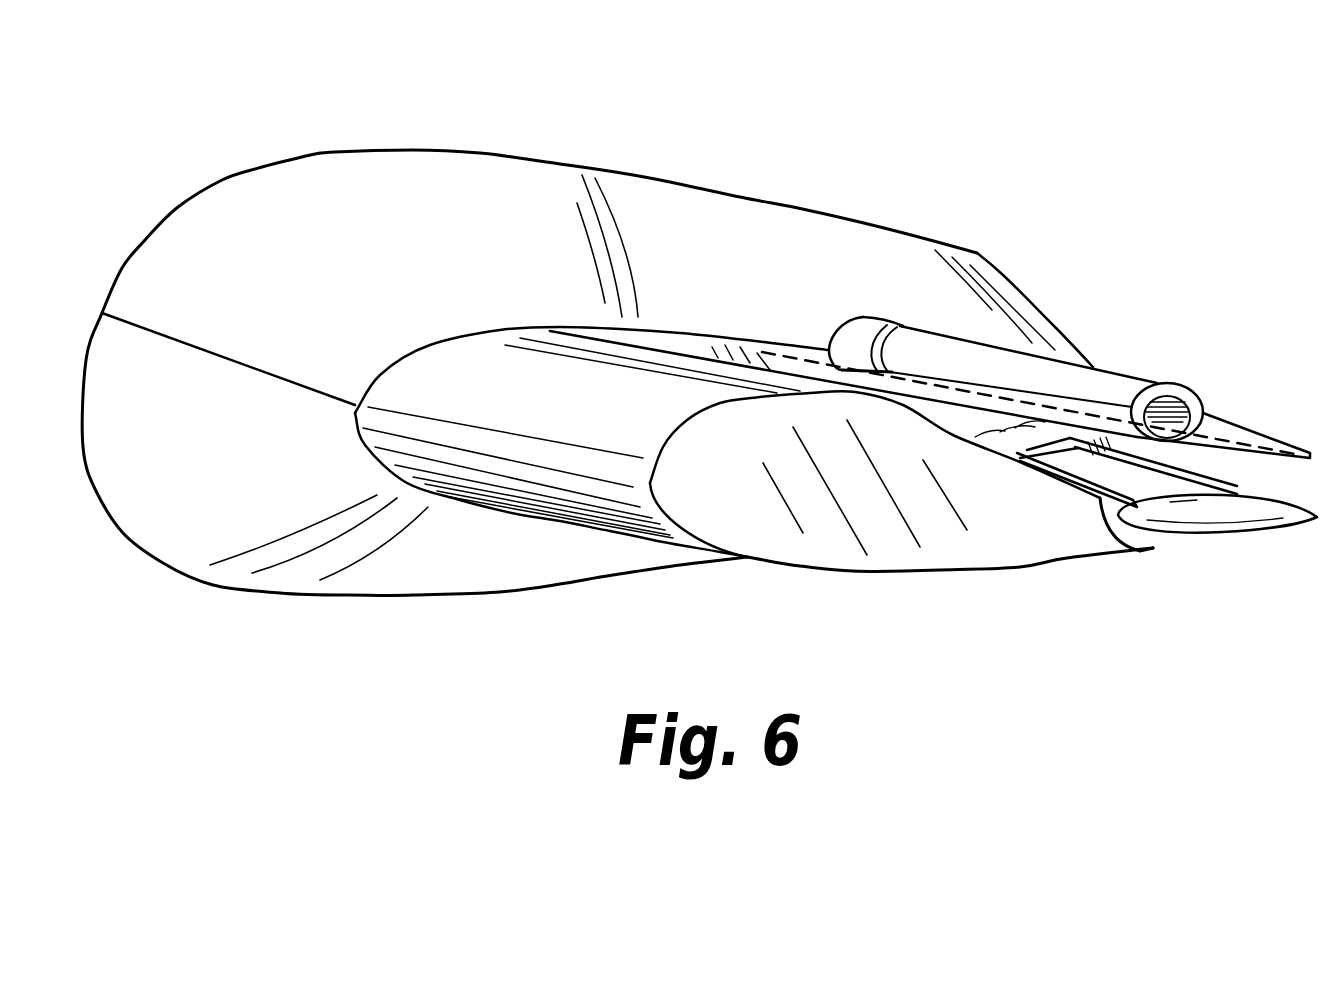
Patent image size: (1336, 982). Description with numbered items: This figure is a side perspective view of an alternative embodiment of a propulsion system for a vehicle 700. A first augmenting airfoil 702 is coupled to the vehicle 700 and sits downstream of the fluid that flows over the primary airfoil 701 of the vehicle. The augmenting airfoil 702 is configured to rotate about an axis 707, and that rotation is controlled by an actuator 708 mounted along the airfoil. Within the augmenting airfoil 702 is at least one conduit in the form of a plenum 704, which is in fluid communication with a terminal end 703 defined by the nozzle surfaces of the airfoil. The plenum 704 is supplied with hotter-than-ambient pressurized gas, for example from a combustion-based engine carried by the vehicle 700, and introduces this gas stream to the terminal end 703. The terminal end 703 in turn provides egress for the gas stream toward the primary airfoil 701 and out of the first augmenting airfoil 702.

The vehicle 700 is at (336, 243).
The primary airfoil 701 is at (586, 431).
The first augmenting airfoil 702 is at (1103, 383).
The terminal end 703 is at (938, 373).
The plenum 704 is at (1187, 396).
The axis 707 is at (762, 340).
The actuator 708 is at (862, 330).